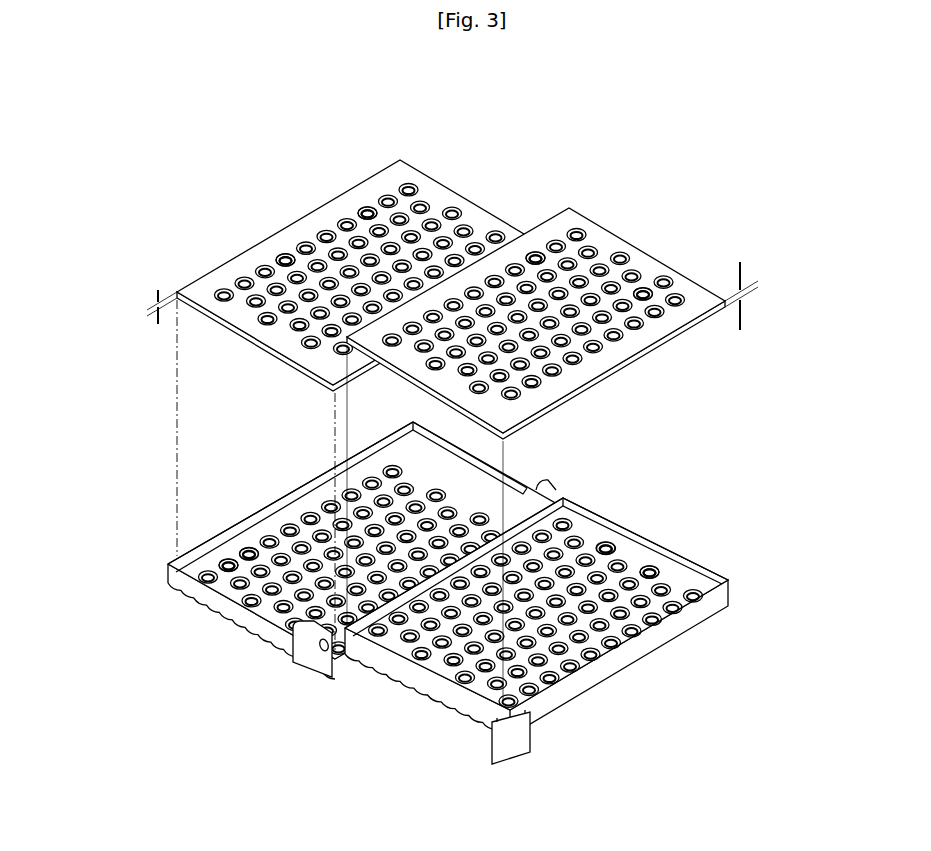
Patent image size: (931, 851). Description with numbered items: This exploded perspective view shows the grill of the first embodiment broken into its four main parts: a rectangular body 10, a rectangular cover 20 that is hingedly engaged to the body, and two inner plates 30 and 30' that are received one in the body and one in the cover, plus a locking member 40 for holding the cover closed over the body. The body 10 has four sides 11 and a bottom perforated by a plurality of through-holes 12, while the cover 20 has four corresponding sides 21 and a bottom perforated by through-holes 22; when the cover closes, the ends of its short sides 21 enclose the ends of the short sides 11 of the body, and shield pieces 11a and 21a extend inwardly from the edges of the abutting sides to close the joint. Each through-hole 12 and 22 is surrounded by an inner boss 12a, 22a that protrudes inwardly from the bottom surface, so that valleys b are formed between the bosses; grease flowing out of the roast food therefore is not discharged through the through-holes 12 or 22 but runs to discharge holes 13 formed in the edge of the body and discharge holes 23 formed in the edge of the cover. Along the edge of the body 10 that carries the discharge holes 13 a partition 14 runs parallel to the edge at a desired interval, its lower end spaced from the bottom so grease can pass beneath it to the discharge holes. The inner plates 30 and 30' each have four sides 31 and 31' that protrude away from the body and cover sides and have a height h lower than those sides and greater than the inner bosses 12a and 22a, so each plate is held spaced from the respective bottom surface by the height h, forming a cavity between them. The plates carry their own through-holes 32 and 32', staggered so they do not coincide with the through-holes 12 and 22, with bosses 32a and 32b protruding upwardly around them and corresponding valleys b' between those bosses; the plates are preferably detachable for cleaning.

The body 10 is at (579, 639).
The sides of the body 11 is at (586, 598).
The shield piece 11a is at (728, 603).
The through-holes 12 is at (608, 542).
The inner boss 12a is at (602, 542).
The discharge holes 13 is at (420, 716).
The partition 14 is at (420, 666).
The cover 20 is at (319, 579).
The sides of the cover 21 is at (319, 530).
The shield piece 21a is at (168, 562).
The through-holes 22 is at (270, 536).
The inner boss 22a is at (246, 548).
The discharge holes 23 is at (243, 635).
The inner plate 30 is at (536, 289).
The inner plate 30' is at (366, 232).
The sides of the inner plate 31 is at (536, 323).
The sides of the inner plate 31' is at (366, 281).
The through-holes 32 is at (534, 273).
The through-holes 32' is at (366, 260).
The boss 32a is at (645, 287).
The boss 32b is at (284, 254).
The locking member 40 is at (516, 752).
The valleys b is at (413, 523).
The valleys b' is at (451, 198).
The height h is at (450, 296).